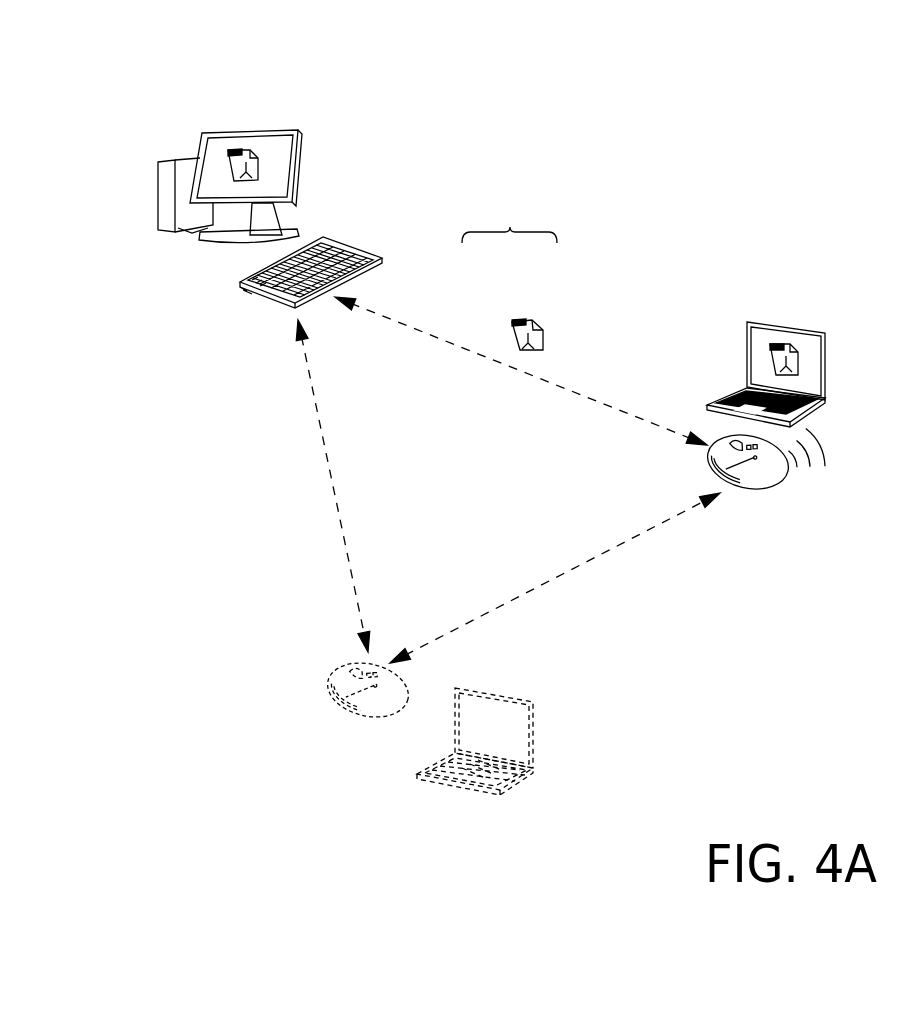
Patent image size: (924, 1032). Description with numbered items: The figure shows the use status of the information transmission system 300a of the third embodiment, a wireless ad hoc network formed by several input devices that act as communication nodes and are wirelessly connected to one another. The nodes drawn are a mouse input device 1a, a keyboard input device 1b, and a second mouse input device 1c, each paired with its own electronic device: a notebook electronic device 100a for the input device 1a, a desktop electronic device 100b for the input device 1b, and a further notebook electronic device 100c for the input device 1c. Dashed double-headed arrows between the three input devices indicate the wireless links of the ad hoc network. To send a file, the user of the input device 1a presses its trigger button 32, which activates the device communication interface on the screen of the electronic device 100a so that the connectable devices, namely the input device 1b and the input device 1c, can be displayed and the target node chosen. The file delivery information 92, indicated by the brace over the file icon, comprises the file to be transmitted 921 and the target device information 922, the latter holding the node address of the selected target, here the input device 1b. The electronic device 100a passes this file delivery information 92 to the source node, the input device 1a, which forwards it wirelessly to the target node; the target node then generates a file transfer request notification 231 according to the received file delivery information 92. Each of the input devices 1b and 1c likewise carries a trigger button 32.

The electronic device 100b is at (230, 152).
The input device 1b is at (325, 243).
The trigger button 32 is at (267, 273).
The file transfer request notification 231 is at (240, 282).
The electronic device 100a is at (750, 323).
The input device 1a is at (767, 473).
The input device 1c is at (388, 702).
The electronic device 100c is at (532, 730).
The file delivery information 92 is at (507, 272).
The file to be transmitted 921 is at (530, 320).
The target device information 922 is at (250, 132).
The information transmission system 300a is at (592, 177).